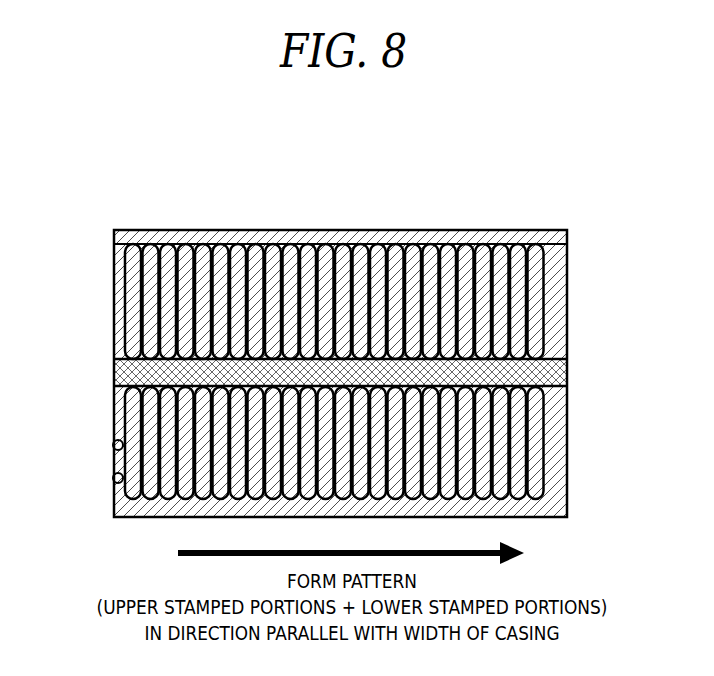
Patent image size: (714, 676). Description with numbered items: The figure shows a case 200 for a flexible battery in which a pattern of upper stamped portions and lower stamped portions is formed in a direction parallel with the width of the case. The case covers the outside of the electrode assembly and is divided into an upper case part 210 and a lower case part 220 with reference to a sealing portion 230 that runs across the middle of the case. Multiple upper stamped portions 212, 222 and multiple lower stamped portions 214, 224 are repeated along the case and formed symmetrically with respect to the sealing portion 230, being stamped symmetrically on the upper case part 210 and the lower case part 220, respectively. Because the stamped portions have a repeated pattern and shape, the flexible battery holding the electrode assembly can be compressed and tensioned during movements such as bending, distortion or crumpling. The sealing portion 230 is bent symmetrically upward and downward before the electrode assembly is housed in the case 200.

The casing 200 is at (510, 212).
The upper case part 210 is at (345, 301).
The upper stamped portions 212 is at (517, 281).
The lower stamped portions 214 is at (535, 323).
The lower case part 220 is at (345, 443).
The upper stamped portions 222 is at (500, 427).
The lower stamped portions 224 is at (517, 473).
The sealing portion 230 is at (116, 378).